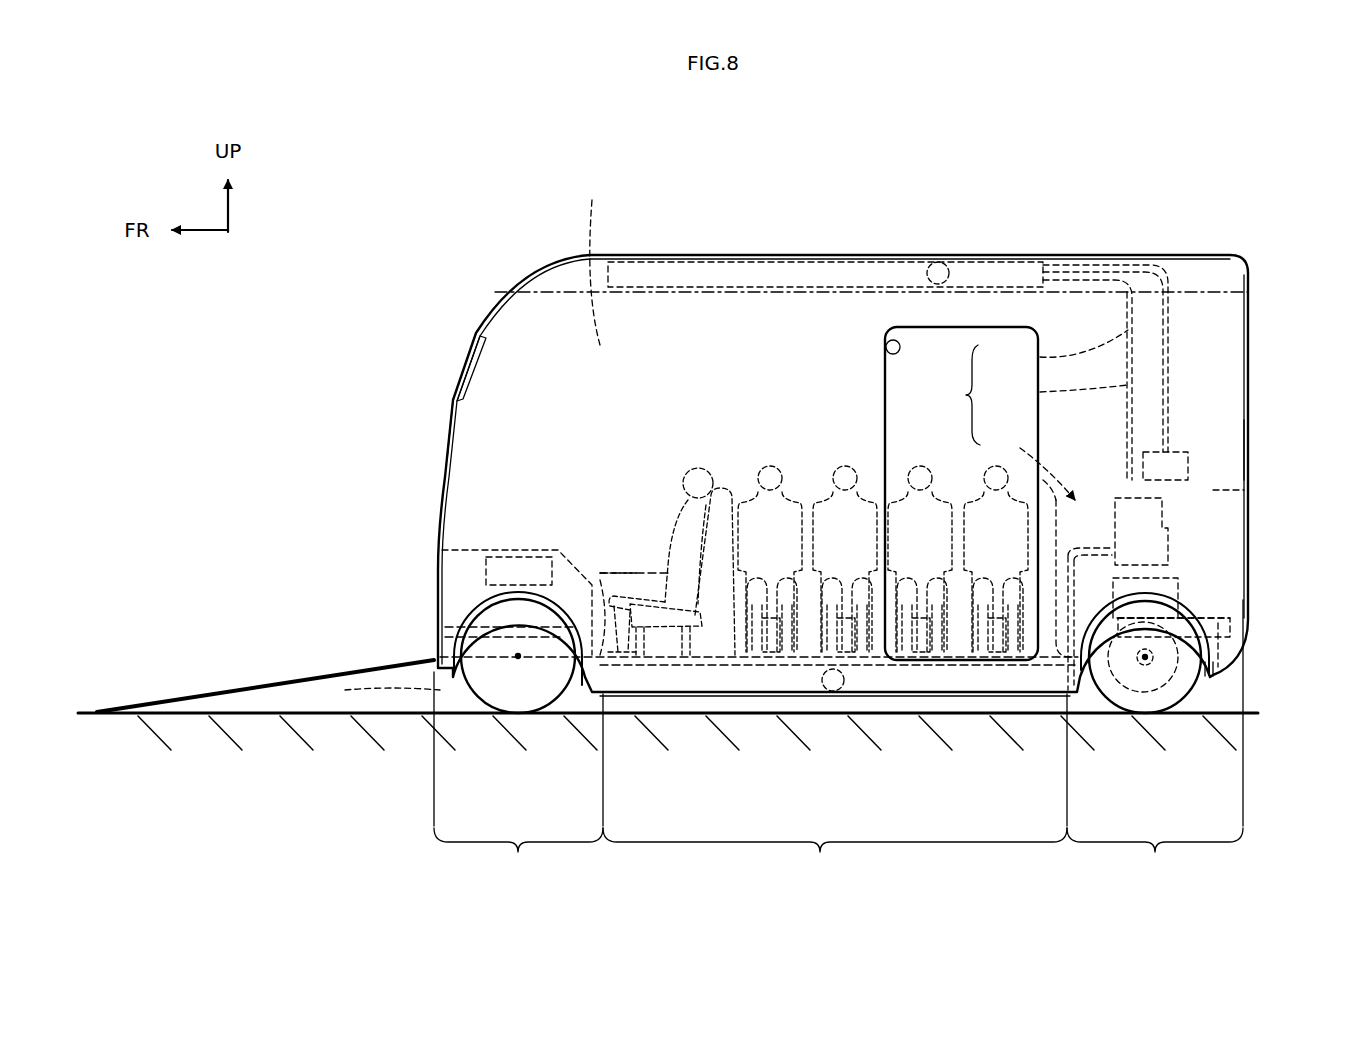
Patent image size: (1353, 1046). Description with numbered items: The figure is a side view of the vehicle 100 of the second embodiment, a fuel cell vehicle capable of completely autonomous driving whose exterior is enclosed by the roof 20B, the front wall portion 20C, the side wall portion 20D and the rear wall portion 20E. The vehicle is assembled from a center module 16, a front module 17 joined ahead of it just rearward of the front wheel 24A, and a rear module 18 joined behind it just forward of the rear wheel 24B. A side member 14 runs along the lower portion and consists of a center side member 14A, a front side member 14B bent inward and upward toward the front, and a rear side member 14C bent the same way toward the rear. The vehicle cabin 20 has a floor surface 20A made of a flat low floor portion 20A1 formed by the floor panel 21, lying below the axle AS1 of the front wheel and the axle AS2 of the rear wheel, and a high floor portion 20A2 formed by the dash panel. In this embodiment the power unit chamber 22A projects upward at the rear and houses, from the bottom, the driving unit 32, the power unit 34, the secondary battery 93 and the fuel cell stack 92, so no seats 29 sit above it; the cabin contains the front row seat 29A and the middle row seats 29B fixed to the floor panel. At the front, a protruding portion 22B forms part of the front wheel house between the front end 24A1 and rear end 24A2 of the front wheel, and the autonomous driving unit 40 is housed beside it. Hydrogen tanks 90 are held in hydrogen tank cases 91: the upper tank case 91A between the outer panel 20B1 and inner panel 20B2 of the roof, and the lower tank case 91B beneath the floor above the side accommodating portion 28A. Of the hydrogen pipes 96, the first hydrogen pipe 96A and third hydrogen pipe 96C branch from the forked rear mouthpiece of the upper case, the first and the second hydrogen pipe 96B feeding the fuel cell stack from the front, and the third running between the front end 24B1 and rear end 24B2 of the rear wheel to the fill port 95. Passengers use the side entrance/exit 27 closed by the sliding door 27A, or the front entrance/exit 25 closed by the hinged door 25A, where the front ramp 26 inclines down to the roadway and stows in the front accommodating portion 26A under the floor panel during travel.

The vehicle 100 is at (843, 398).
The vehicle cabin 20 is at (565, 340).
The floor surface 20A is at (760, 490).
The low floor portion 20A1 is at (668, 573).
The high floor portion 20A2 is at (1232, 456).
The roof 20B is at (790, 254).
The outer panel 20B1 is at (740, 262).
The inner panel 20B2 is at (668, 295).
The front wall portion 20C is at (445, 418).
The side wall portion 20D is at (598, 260).
The rear wall portion 20E is at (1250, 348).
The front entrance/exit 25 is at (463, 398).
The hinged door 25A is at (440, 460).
The front ramp 26 is at (305, 668).
The front accommodating portion 26A is at (371, 698).
The side entrance/exit 27 is at (888, 345).
The sliding door 27A is at (905, 372).
The seats 29 is at (818, 517).
The front row seat 29A is at (725, 472).
The middle row seats 29B is at (835, 472).
The autonomous driving unit 40 is at (548, 556).
The power unit chamber 22A is at (1246, 632).
The protruding portion 22B is at (582, 565).
The front wheel 24A is at (512, 690).
The front end of front wheel 24A1 is at (440, 650).
The rear end of front wheel 24A2 is at (576, 576).
The rear wheel 24B is at (1088, 700).
The front end of rear wheel 24B1 is at (1080, 680).
The rear end of rear wheel 24B2 is at (1182, 700).
The side member 14 is at (600, 705).
The center side member 14A is at (780, 700).
The front side member 14B is at (470, 570).
The rear side member 14C is at (1195, 692).
The center module 16 is at (835, 787).
The front module 17 is at (518, 777).
The rear module 18 is at (1155, 739).
The floor panel 21 is at (700, 645).
The side accommodating portion 28A is at (965, 655).
The driving unit 32 is at (1155, 680).
The power unit 34 is at (1207, 606).
The hydrogen tank 90 is at (938, 262).
The hydrogen tank case 91 is at (1023, 476).
The upper tank case 91A is at (975, 255).
The lower tank case 91B is at (880, 692).
The fuel cell stack 92 is at (1140, 532).
The secondary battery 93 is at (1173, 568).
The fill port 95 is at (1178, 440).
The hydrogen pipes 96 is at (1031, 415).
The first hydrogen pipe 96A is at (1053, 392).
The second hydrogen pipe 96B is at (1026, 462).
The third hydrogen pipe 96C is at (1053, 349).
The axle of front wheels AS1 is at (518, 656).
The axle of rear wheels AS2 is at (1145, 657).